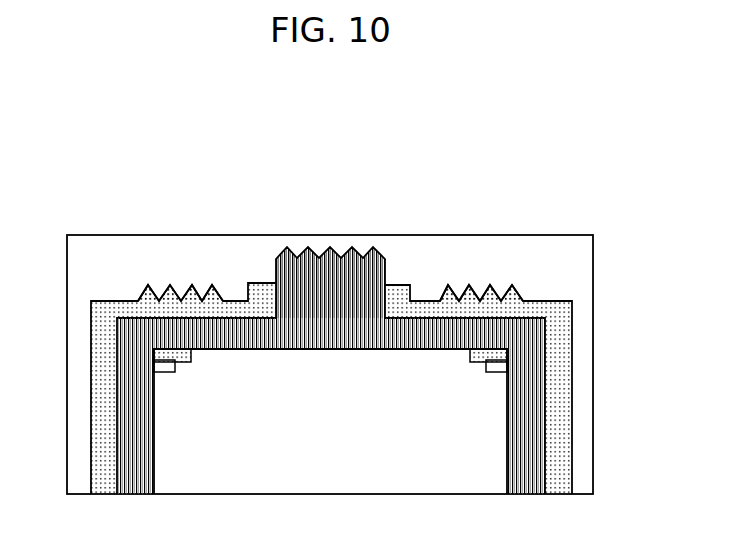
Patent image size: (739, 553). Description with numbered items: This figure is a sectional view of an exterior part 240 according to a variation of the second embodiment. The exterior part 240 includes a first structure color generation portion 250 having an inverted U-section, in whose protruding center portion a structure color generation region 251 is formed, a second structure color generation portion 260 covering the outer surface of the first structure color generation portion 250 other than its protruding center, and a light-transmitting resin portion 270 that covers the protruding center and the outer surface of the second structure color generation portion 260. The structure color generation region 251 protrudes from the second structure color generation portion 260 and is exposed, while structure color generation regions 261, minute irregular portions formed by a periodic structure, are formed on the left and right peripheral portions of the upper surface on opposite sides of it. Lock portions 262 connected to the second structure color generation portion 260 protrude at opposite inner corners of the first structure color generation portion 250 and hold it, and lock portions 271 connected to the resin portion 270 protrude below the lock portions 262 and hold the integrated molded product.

The exterior part 240 is at (380, 292).
The first structure color generation portion 250 is at (315, 349).
The structure color generation region 251 is at (330, 248).
The second structure color generation portion 260 is at (560, 356).
The structure color generation region 261 is at (190, 284).
The lock portion 262 is at (183, 362).
The resin portion 270 is at (497, 248).
The lock portion 271 is at (164, 372).